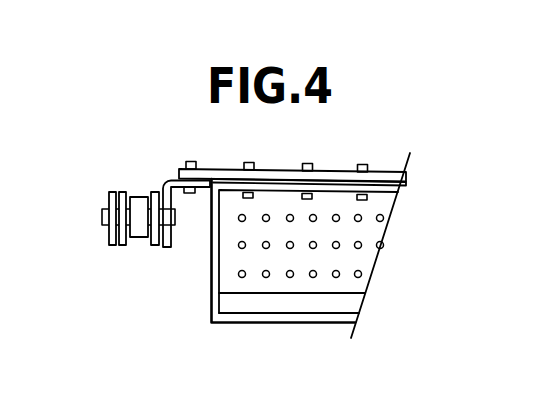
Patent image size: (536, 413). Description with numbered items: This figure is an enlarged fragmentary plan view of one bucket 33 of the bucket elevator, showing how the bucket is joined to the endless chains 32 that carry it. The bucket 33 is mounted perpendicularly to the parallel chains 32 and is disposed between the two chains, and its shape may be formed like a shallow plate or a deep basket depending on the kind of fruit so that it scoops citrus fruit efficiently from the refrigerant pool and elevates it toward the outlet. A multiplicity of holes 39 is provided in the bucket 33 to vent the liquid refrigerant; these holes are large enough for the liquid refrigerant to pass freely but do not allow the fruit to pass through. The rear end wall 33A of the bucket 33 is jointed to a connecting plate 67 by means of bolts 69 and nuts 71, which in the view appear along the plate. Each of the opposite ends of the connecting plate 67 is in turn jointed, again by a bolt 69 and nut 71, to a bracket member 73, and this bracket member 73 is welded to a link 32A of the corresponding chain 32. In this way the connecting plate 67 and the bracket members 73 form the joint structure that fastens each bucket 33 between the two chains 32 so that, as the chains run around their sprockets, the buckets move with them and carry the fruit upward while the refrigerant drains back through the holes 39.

The endless chain 32 is at (137, 237).
The link 32A is at (168, 247).
The bucket 33 is at (268, 325).
The rear end wall 33A is at (270, 181).
The holes 39 is at (361, 249).
The connecting plate 67 is at (335, 170).
The bolt 69 is at (190, 193).
The nut 71 is at (247, 162).
The bracket member 73 is at (162, 184).